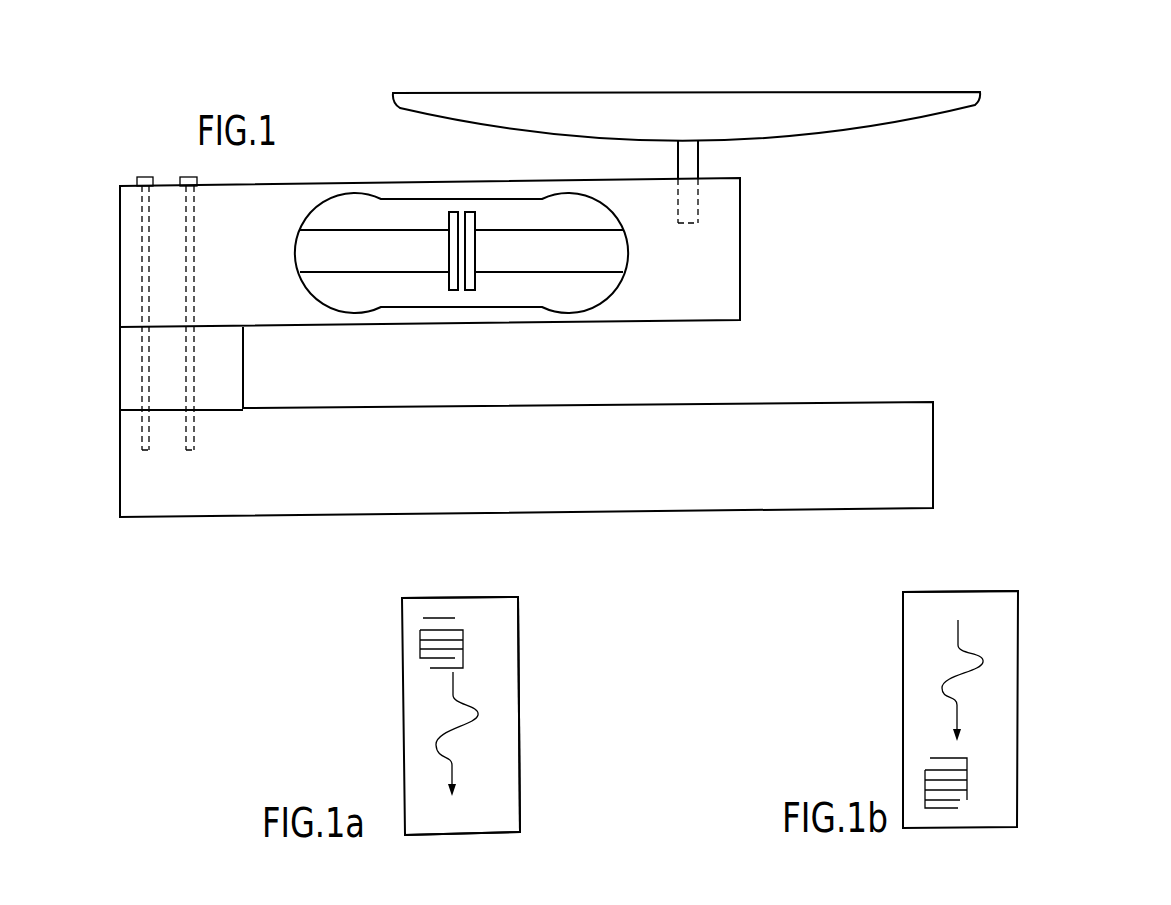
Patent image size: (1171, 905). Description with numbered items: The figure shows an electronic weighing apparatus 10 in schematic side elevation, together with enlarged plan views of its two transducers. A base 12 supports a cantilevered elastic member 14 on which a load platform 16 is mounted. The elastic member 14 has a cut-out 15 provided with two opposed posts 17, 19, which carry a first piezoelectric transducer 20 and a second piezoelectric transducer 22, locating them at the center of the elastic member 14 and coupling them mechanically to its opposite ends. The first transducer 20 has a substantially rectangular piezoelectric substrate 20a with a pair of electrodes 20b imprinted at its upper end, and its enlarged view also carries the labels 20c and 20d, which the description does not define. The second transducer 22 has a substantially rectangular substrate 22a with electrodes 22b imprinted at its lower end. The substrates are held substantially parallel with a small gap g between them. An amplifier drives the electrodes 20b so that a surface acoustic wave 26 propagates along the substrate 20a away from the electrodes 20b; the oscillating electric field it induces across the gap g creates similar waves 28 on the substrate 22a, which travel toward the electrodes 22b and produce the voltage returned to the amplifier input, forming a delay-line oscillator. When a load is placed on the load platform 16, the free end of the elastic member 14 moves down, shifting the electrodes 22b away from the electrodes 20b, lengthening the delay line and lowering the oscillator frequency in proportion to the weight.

In FIG. 1, the electronic weighing apparatus 10 is at (229, 548).
In FIG. 1, the base 12 is at (526, 422).
In FIG. 1, the cantilevered elastic member 14 is at (689, 315).
In FIG. 1, the cut-out 15 is at (461, 277).
In FIG. 1, the load platform 16 is at (828, 122).
In FIG. 1, the post 17 is at (363, 266).
In FIG. 1, the post 19 is at (550, 265).
In FIG. 1, the first piezoelectric transducer 20 is at (447, 216).
In FIG. 1a, the first piezoelectric transducer 20 is at (402, 763).
In FIG. 1a, the piezoelectric substrate 20a is at (500, 773).
In FIG. 1a, the electrodes 20b is at (482, 654).
In FIG. 1a, the first plate bottom edge 20c is at (487, 834).
In FIG. 1a, the first plate top edge 20d is at (450, 596).
In FIG. 1, the second piezoelectric transducer 22 is at (474, 215).
In FIG. 1b, the second piezoelectric transducer 22 is at (1020, 747).
In FIG. 1b, the piezoelectric substrate 22a is at (1007, 618).
In FIG. 1b, the electrodes 22b is at (947, 822).
In FIG. 1a, the surface acoustic wave 26 is at (484, 705).
In FIG. 1b, the induced surface acoustic wave 28 is at (994, 657).
In FIG. 1, the gap g is at (460, 305).